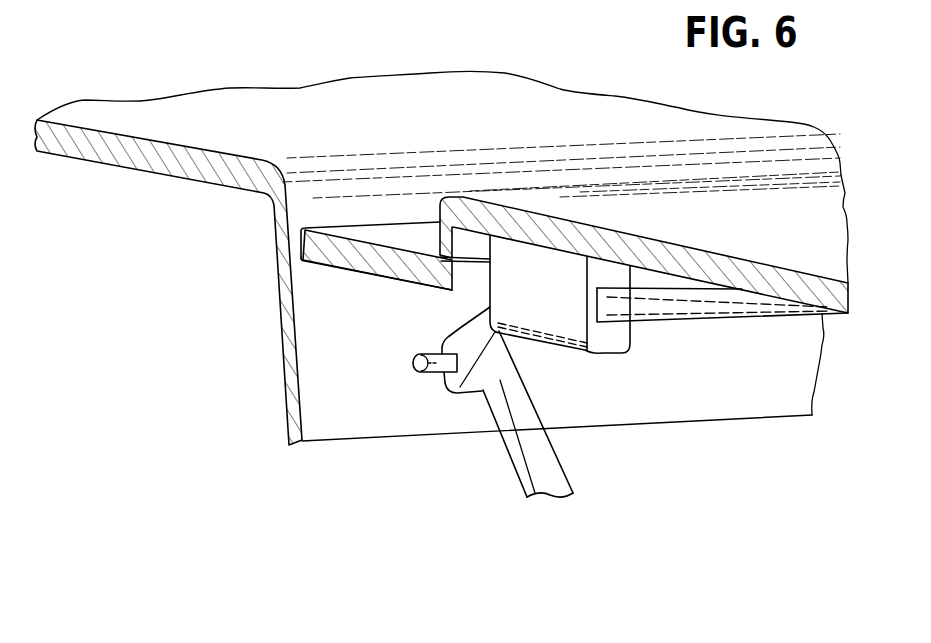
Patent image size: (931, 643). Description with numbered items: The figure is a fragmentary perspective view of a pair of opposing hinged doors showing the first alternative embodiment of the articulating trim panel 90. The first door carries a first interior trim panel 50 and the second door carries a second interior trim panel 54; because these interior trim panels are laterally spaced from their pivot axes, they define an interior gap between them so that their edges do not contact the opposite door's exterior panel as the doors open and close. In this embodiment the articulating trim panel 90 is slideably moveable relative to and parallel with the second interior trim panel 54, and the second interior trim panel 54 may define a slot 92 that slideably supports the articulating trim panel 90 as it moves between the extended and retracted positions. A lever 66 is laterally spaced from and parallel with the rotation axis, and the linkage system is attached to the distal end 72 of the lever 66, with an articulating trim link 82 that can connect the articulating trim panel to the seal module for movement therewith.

The first interior trim panel 50 is at (305, 117).
The second interior trim panel 54 is at (800, 222).
The lever 66 is at (463, 323).
The distal end 72 is at (447, 390).
The articulating trim link 82 is at (543, 453).
The articulating trim panel 90 is at (383, 233).
The slot 92 is at (643, 317).